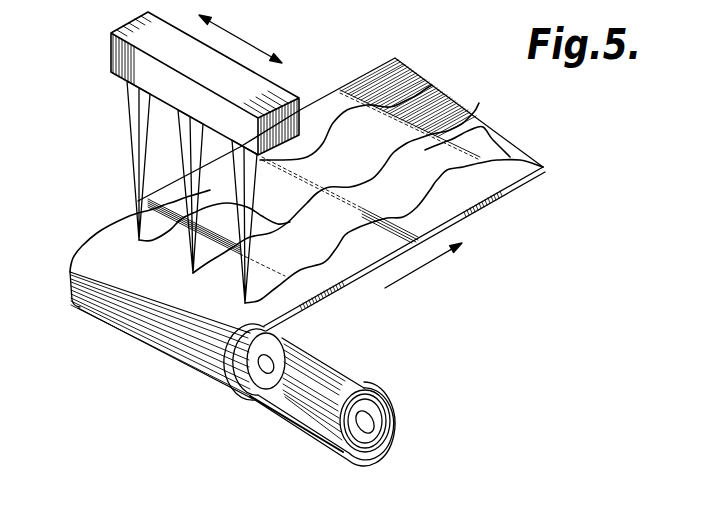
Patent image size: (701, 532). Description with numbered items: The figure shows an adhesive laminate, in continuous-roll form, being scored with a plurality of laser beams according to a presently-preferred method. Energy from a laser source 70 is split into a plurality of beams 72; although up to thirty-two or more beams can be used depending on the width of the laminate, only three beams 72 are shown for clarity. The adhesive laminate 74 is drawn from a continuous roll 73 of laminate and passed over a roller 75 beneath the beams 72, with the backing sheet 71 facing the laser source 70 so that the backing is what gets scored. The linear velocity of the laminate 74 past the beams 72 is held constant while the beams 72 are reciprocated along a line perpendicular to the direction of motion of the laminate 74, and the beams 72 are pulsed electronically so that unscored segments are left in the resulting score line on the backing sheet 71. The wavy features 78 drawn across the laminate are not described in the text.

The laser source 70 is at (133, 65).
The backing sheet 71 is at (486, 206).
The beams 72 is at (193, 197).
The continuous roll 73 is at (373, 407).
The adhesive laminate 74 is at (372, 92).
The roller 75 is at (288, 367).
The wavy ridges 78 is at (473, 163).